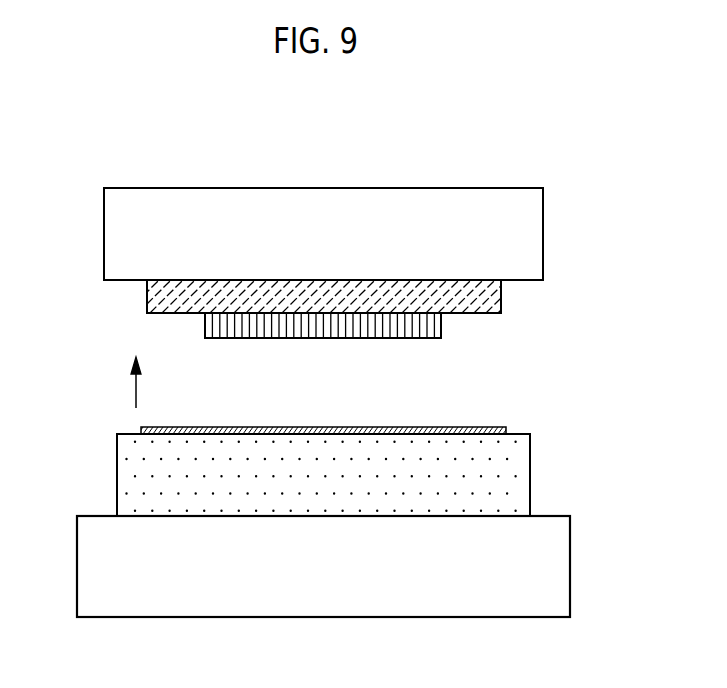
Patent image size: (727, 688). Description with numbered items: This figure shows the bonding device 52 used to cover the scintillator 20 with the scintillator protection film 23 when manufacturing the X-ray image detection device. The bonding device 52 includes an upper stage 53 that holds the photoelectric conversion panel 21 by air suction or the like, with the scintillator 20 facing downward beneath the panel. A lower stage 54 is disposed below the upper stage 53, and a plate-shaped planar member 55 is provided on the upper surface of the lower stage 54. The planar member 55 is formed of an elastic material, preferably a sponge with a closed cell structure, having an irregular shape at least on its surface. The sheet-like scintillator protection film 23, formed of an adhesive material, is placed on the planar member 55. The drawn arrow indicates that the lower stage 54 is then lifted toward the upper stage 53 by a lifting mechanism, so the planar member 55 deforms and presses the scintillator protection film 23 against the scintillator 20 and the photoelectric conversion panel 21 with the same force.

The bonding device 52 is at (413, 177).
The upper stage 53 is at (533, 236).
The photoelectric conversion panel 21 is at (495, 294).
The scintillator 20 is at (325, 337).
The scintillator protection film 23 is at (272, 427).
The planar member 55 is at (522, 434).
The lower stage 54 is at (560, 573).